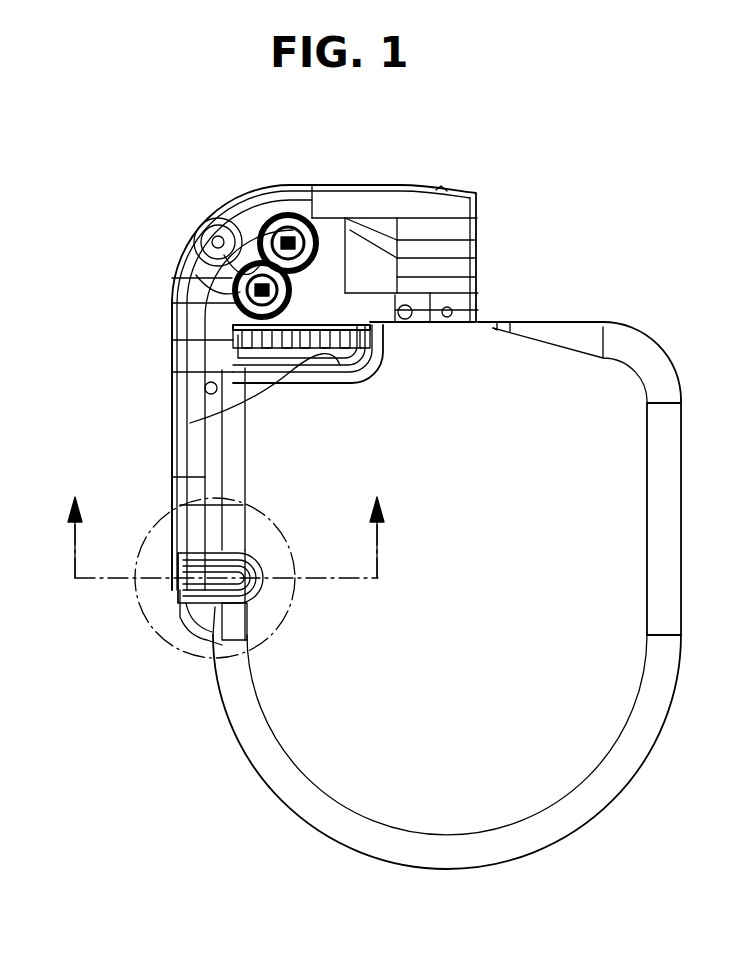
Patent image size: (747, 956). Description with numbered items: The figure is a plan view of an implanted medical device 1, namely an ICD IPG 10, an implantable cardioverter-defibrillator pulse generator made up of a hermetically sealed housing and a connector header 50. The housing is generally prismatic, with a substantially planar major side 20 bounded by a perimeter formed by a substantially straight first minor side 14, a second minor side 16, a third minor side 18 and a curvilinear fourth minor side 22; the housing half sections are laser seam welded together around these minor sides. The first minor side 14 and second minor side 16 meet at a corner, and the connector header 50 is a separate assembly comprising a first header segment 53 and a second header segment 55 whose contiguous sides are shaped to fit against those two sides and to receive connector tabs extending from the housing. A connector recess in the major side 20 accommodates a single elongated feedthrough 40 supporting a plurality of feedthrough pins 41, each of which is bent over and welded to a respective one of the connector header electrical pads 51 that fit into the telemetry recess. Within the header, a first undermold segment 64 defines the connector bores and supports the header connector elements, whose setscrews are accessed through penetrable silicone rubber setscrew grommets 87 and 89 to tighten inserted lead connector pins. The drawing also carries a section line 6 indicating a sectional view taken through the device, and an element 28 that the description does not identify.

The medical instrument assembly 1 is at (688, 612).
The ICD IPG 10 is at (350, 112).
The first minor side 14 is at (202, 648).
The second minor side 16 is at (553, 322).
The third minor side 18 is at (683, 525).
The planar major side 20 is at (557, 705).
The curvilinear fourth minor side 22 is at (603, 808).
The channel 28 is at (232, 366).
The elongated feedthrough 40 is at (193, 422).
The feedthrough pins 41 is at (232, 360).
The connector header 50 is at (438, 166).
The connector header electrical pads 51 is at (233, 337).
The first header segment 53 is at (178, 458).
The second header segment 55 is at (330, 203).
The section line 6- 6 is at (226, 519).
The first undermold segment 64 is at (738, 298).
The setscrew grommet 87 is at (267, 218).
The setscrew grommet 89 is at (197, 285).